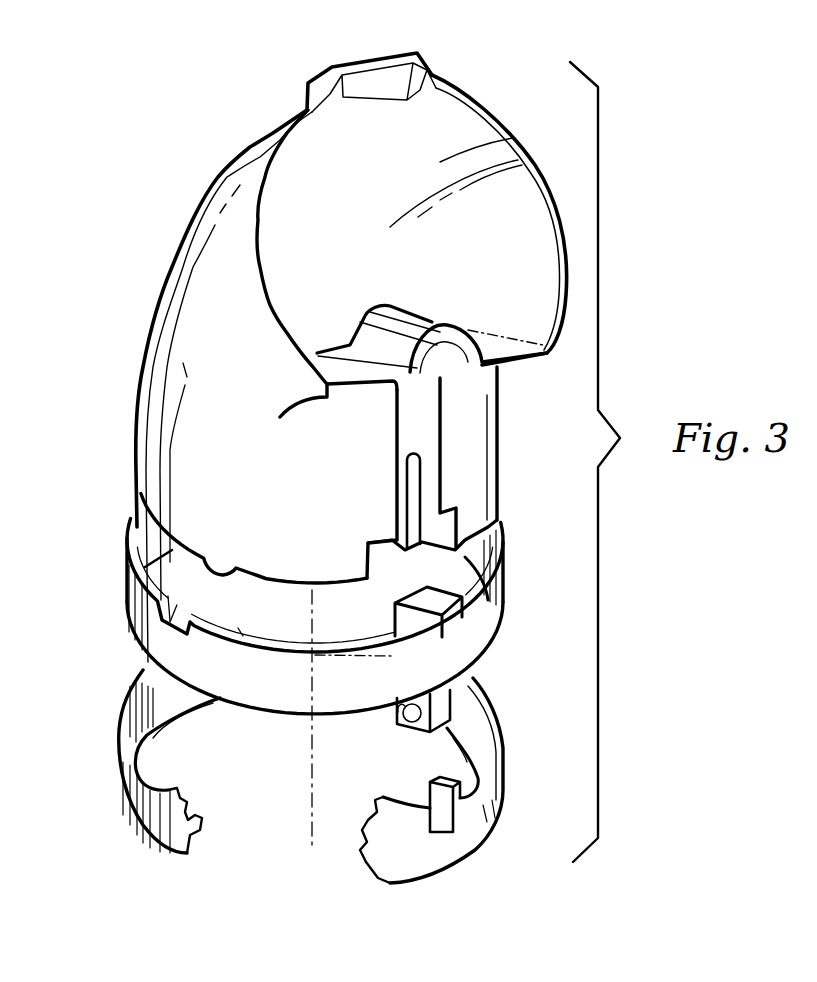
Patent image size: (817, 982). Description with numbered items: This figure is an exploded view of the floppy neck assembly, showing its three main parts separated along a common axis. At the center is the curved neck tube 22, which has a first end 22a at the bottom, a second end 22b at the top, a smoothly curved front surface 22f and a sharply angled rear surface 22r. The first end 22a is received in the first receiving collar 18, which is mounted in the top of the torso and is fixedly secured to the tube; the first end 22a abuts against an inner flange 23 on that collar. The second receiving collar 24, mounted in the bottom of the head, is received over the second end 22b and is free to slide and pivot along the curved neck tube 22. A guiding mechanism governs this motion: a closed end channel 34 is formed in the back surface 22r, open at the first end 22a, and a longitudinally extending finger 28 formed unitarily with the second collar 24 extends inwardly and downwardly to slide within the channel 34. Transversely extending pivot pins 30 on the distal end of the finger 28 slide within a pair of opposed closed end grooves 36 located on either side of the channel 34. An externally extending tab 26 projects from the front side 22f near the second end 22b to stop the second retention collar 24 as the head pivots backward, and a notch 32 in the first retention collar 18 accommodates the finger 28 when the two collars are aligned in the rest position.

The first receiving collar 18 is at (460, 837).
The curved neck tube 22 is at (467, 91).
The first end 22a is at (138, 512).
The second end 22b is at (547, 162).
The front surface 22f is at (220, 180).
The rear surface 22r is at (467, 480).
The inner flange 23 is at (157, 710).
The second receiving collar 24 is at (142, 607).
The externally extending tab 26 is at (362, 55).
The finger 28 is at (410, 617).
The pivot pins 30 is at (403, 727).
The notch 32 is at (437, 780).
The channel 34 is at (417, 403).
The grooves 36 is at (417, 491).